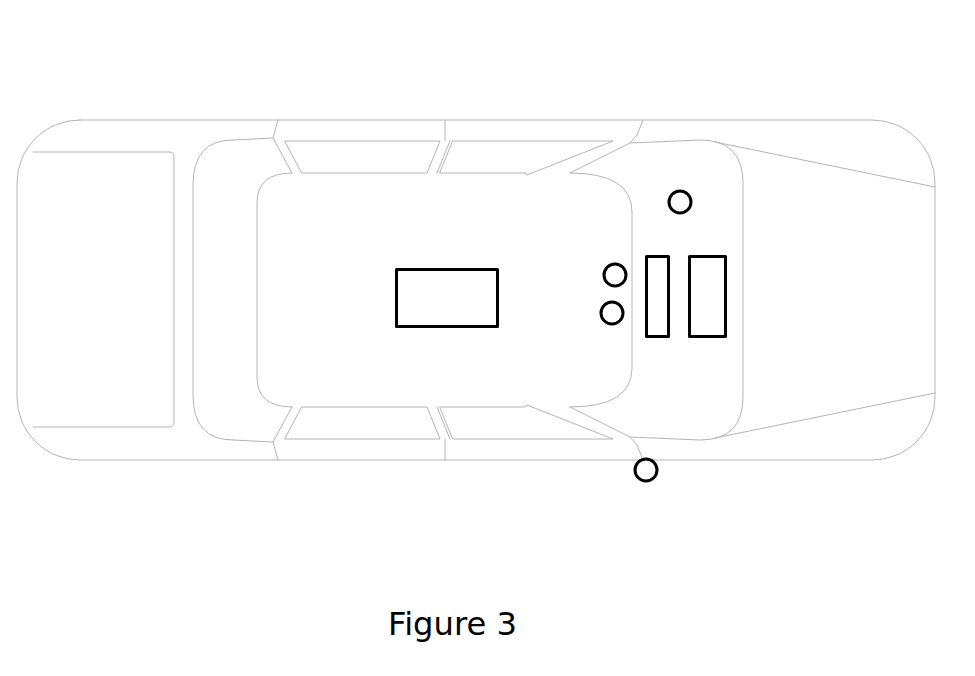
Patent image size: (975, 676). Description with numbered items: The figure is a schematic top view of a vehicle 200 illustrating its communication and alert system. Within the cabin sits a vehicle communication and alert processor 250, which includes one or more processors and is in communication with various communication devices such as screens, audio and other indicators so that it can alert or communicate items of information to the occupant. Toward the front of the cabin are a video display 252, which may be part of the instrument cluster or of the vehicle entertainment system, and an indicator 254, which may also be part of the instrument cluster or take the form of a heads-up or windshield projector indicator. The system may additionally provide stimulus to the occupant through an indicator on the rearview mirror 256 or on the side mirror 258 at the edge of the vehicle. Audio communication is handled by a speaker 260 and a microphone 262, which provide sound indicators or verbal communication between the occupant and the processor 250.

The vehicle 200 is at (246, 101).
The vehicle communication and alert processor 250 is at (447, 298).
The video display 252 is at (712, 255).
The indicator 254 is at (680, 190).
The rearview mirror 256 is at (656, 255).
The side mirror 258 is at (646, 482).
The speaker 260 is at (615, 263).
The microphone 262 is at (612, 325).